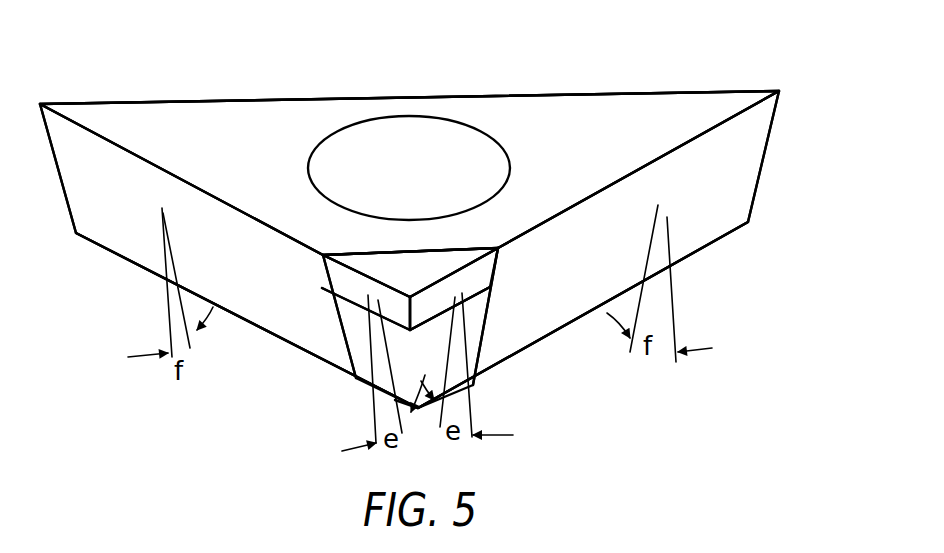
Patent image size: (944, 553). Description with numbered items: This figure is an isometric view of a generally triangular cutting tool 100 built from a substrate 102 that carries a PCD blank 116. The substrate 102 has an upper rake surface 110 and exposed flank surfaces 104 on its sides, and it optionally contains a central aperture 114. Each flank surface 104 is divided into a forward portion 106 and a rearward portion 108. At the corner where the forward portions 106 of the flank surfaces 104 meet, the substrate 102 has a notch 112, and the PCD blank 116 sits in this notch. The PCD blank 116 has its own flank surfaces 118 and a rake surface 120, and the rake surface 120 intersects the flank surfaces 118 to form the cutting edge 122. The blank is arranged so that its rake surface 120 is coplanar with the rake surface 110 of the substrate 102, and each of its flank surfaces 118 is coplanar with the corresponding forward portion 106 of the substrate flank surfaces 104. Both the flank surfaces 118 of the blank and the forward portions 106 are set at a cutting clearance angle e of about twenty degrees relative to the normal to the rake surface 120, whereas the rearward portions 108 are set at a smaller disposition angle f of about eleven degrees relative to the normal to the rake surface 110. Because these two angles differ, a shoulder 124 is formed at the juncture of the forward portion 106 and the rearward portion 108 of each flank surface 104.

The cutting tool 100 is at (514, 66).
The substrate 102 is at (277, 98).
The flank surfaces 104 is at (101, 221).
The forward portion 106 is at (366, 368).
The rearward portion 108 is at (136, 243).
The rake surface 110 is at (691, 113).
The notch 112 is at (359, 257).
The aperture 114 is at (417, 143).
The PCD blank 116 is at (435, 265).
The flank surfaces 118 is at (457, 283).
The rake surface 120 is at (485, 247).
The cutting edge 122 is at (322, 288).
The shoulder 124 is at (475, 318).